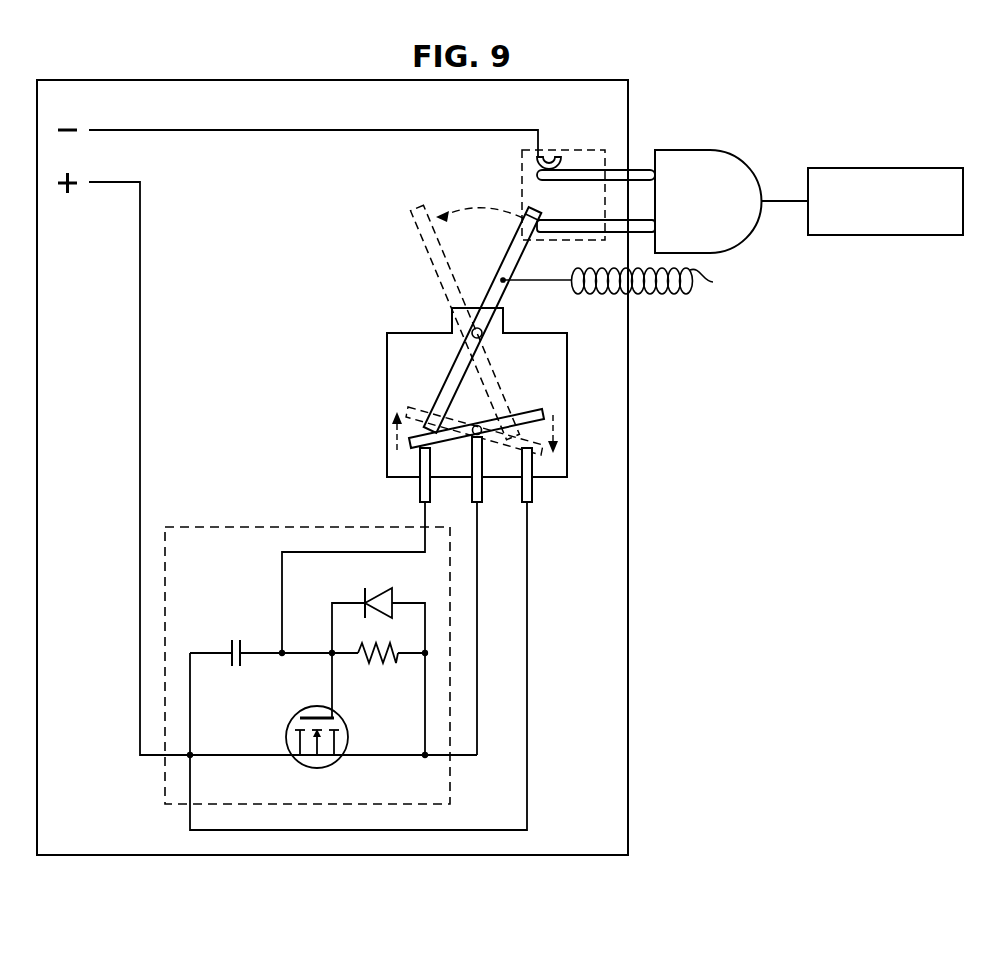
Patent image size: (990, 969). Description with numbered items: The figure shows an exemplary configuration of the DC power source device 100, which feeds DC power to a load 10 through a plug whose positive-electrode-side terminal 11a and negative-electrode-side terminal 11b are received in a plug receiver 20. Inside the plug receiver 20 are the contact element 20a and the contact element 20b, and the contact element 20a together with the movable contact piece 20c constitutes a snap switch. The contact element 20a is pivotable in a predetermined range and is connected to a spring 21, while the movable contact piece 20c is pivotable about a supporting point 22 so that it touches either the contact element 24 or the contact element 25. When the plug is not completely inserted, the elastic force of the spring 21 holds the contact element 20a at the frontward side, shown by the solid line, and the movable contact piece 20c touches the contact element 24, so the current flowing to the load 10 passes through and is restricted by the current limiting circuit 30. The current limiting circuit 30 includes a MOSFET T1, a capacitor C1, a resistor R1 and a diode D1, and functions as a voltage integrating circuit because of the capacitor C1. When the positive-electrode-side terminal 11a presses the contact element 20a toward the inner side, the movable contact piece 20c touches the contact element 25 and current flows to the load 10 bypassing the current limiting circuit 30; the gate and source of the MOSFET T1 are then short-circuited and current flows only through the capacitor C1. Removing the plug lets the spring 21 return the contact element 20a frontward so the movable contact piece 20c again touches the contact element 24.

The load 10 is at (928, 166).
The positive-electrode-side terminal 11a is at (567, 229).
The negative-electrode-side terminal 11b is at (580, 170).
The plug receiver 20 is at (561, 183).
The contact element 20a is at (528, 211).
The contact element 20b is at (552, 152).
The movable contact piece 20c is at (537, 406).
The spring 21 is at (662, 296).
The supporting point 22 is at (473, 428).
The contact element 24 is at (419, 490).
The contact element 25 is at (533, 491).
The current limiting circuit 30 is at (281, 527).
The DC power source device 100 is at (628, 528).
The capacitor C1 is at (237, 639).
The diode D1 is at (380, 590).
The resistor R1 is at (378, 668).
The MOSFET T1 is at (294, 716).